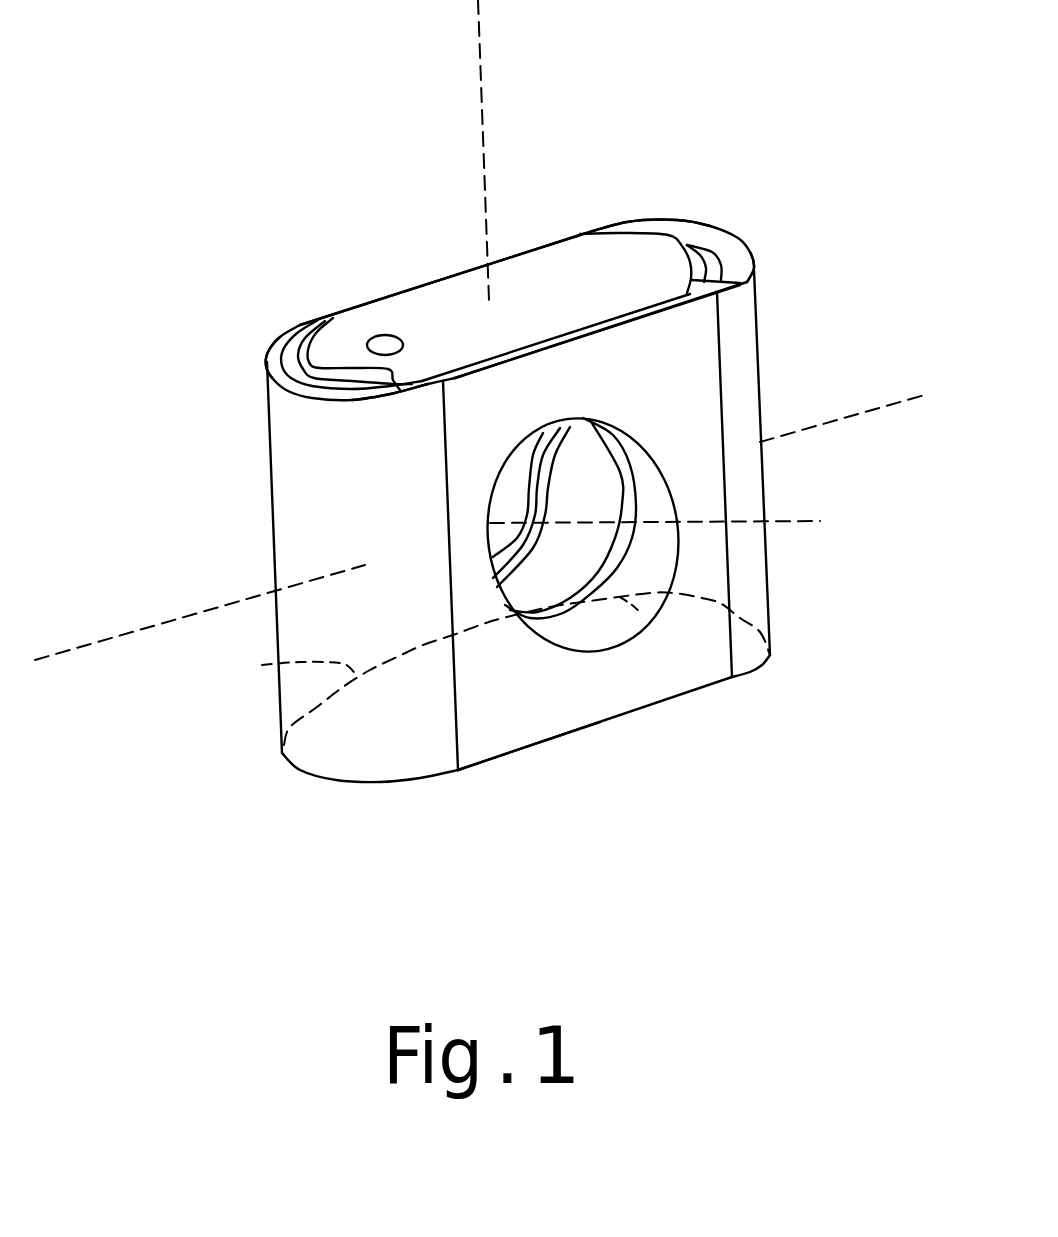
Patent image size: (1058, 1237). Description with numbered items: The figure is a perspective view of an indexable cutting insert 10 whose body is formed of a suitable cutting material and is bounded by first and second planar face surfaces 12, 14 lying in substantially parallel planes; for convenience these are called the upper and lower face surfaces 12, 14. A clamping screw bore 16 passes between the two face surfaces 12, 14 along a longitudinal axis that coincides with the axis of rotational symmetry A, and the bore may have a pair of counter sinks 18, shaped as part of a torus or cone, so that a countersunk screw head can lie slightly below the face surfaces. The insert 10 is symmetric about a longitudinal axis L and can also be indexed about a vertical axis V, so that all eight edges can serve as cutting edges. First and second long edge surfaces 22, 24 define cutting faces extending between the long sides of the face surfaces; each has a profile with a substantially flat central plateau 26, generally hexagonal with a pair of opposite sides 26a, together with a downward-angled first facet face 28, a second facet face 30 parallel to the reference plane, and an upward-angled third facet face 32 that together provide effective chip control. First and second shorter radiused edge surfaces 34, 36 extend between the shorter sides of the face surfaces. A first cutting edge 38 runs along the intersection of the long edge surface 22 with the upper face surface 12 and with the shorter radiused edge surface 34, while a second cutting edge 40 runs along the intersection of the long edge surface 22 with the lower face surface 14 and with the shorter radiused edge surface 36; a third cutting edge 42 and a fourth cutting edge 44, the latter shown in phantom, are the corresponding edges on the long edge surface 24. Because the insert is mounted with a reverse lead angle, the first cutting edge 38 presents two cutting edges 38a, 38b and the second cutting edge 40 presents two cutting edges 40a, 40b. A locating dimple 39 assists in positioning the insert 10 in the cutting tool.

The cutting insert 10 is at (233, 245).
The first planar face surface 12 is at (688, 393).
The second planar face surface 14 is at (318, 305).
The clamping screw bore 16 is at (553, 585).
The counter sinks 18 is at (643, 615).
The first edge surface 22 is at (511, 262).
The second edge surface 24 is at (638, 725).
The central plateau 26 is at (573, 252).
The opposite sides 26a is at (435, 284).
The first facet face 28 is at (735, 280).
The second facet face 30 is at (707, 255).
The third facet face 32 is at (672, 226).
The first radiused edge surface 34 is at (300, 494).
The second radiused edge surface 36 is at (775, 242).
The first cutting edge 38 is at (518, 366).
The cutting edge 38a is at (403, 400).
The cutting edge 38b is at (748, 272).
The locating dimple 39 is at (387, 336).
The second cutting edge 40 is at (415, 280).
The cutting edge 40a is at (258, 358).
The cutting edge 40b is at (641, 216).
The third cutting edge 42 is at (583, 752).
The fourth cutting edge 44 is at (262, 666).
The axis of rotational symmetry A is at (791, 518).
The longitudinal axis L is at (118, 640).
The vertical axis V is at (481, 70).